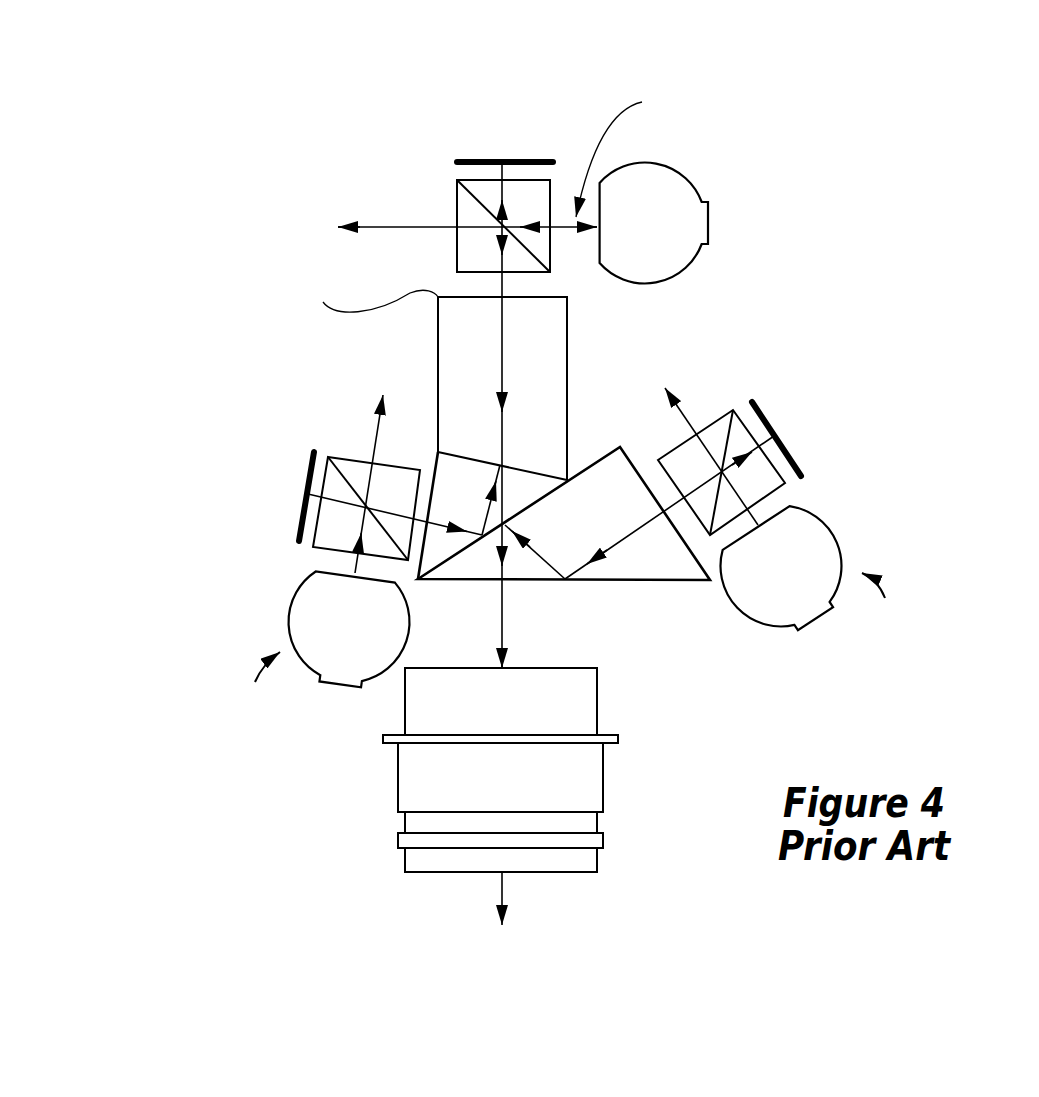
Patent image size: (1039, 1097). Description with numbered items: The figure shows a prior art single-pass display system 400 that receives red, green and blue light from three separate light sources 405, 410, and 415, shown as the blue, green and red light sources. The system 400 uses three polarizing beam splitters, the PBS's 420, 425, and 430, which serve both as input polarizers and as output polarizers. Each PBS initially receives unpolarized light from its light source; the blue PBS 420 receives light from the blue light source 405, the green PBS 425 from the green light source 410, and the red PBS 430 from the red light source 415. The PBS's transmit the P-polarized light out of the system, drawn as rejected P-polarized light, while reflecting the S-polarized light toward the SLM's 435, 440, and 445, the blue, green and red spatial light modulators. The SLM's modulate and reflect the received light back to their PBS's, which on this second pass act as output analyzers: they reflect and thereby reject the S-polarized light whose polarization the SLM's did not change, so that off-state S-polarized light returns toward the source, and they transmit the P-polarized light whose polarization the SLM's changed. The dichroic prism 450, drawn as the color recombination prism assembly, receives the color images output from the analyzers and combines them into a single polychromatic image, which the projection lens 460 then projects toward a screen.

The system 400 is at (902, 170).
The light source 405 is at (288, 620).
The light source 410 is at (660, 285).
The light source 415 is at (843, 540).
The PBS 420 is at (348, 458).
The PBS 425 is at (457, 180).
The PBS 430 is at (733, 411).
The SLM 435 is at (313, 452).
The SLM 440 is at (463, 158).
The SLM 445 is at (765, 410).
The dichroic prism 450 is at (568, 376).
The projection lens 460 is at (398, 847).